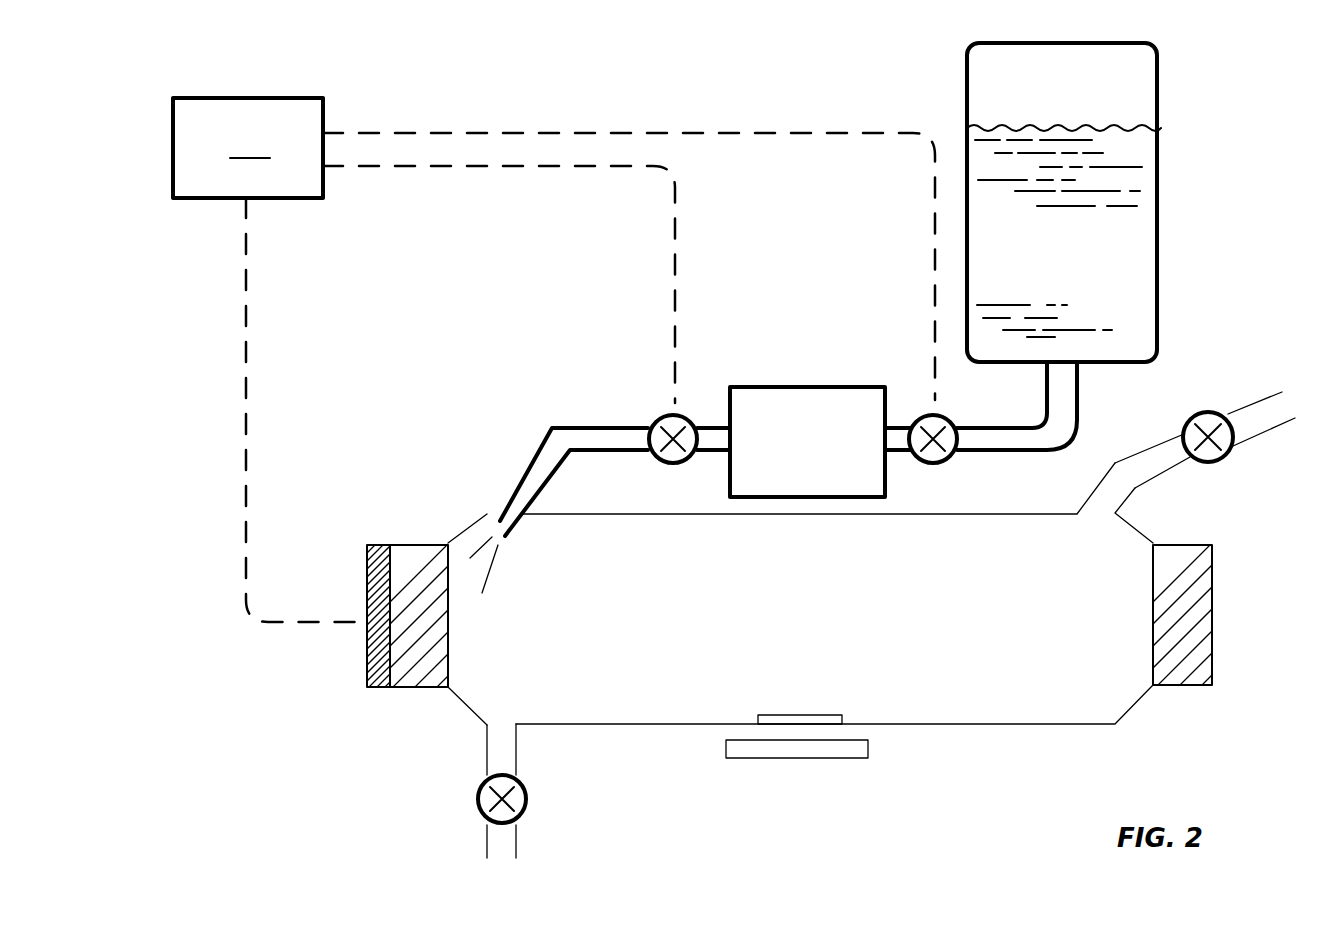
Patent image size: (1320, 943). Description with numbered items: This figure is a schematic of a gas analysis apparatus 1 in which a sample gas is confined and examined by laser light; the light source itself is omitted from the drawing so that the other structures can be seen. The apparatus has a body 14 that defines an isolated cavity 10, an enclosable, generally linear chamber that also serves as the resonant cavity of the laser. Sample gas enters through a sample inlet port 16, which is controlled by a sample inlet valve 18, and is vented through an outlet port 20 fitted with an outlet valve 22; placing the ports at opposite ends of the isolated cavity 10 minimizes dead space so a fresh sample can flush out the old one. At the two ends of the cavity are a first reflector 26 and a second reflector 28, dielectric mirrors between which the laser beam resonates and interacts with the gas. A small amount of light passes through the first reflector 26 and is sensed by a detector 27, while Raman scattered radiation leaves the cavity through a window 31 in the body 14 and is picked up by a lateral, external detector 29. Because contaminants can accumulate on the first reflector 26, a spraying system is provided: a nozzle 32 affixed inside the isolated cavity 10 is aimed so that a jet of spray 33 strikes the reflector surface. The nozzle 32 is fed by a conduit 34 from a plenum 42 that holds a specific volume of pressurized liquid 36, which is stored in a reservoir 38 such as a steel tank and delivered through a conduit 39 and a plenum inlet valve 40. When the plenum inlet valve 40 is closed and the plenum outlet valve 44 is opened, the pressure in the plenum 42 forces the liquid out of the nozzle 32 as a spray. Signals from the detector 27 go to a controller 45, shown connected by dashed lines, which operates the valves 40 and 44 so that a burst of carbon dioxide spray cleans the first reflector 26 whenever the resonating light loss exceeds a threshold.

The gas analysis apparatus 1 is at (838, 50).
The isolated cavity 10 is at (1018, 685).
The body 14 is at (710, 750).
The sample inlet port 16 is at (485, 738).
The sample inlet valve 18 is at (527, 797).
The outlet port 20 is at (1093, 470).
The outlet valve 22 is at (1222, 462).
The first reflector 26 is at (408, 677).
The detector 27 is at (372, 578).
The second reflector 28 is at (1185, 677).
The detector 29 is at (795, 748).
The window 31 is at (795, 720).
The nozzle 32 is at (497, 495).
The jet of spray 33 is at (470, 538).
The conduit 34 is at (540, 456).
The pressurized liquid 36 is at (1140, 178).
The reservoir 38 is at (958, 126).
The conduit 39 is at (1080, 386).
The plenum inlet valve 40 is at (920, 418).
The plenum 42 is at (788, 385).
The plenum outlet valve 44 is at (655, 422).
The controller 45 is at (554, 360).